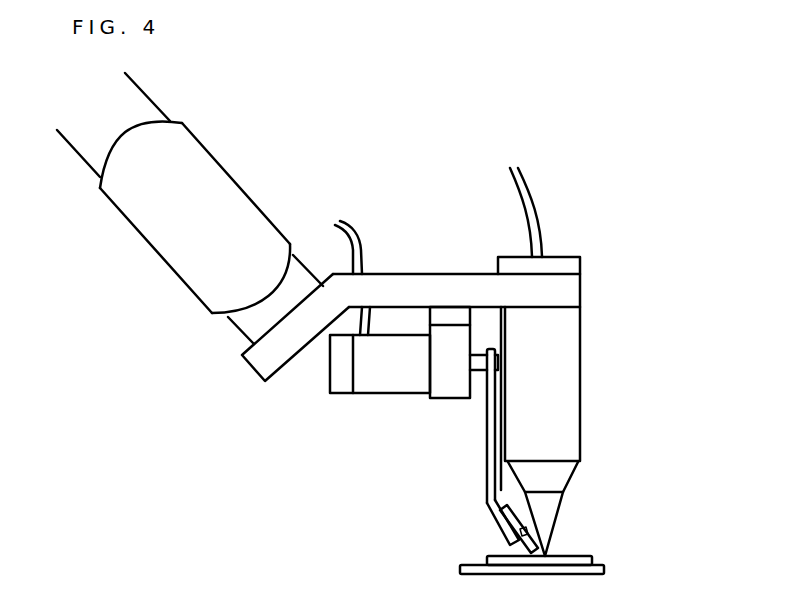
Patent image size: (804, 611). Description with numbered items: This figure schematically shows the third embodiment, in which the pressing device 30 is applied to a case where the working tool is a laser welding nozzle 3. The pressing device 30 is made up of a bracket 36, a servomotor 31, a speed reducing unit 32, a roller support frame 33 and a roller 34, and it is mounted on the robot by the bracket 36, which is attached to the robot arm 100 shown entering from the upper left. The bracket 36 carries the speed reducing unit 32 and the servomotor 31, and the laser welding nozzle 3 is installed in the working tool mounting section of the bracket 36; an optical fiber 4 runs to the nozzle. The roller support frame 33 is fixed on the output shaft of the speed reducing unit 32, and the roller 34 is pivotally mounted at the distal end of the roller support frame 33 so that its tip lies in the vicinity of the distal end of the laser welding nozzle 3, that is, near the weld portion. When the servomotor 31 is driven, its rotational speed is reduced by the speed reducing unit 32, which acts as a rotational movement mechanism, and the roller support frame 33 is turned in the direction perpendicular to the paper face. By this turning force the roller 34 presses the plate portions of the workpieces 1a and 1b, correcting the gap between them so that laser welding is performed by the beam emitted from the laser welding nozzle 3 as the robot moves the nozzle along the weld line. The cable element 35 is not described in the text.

The robot arm 100 is at (213, 168).
The optical fiber 4 is at (531, 192).
The cable 35 is at (350, 231).
The laser welding nozzle 3 is at (582, 386).
The bracket 36 is at (247, 363).
The pressing device 30 is at (366, 482).
The servomotor 31 is at (368, 393).
The speed reducing unit 32 is at (437, 398).
The roller support frame 33 is at (493, 457).
The roller 34 is at (492, 503).
The workpiece 1b is at (575, 553).
The workpiece 1a is at (573, 574).